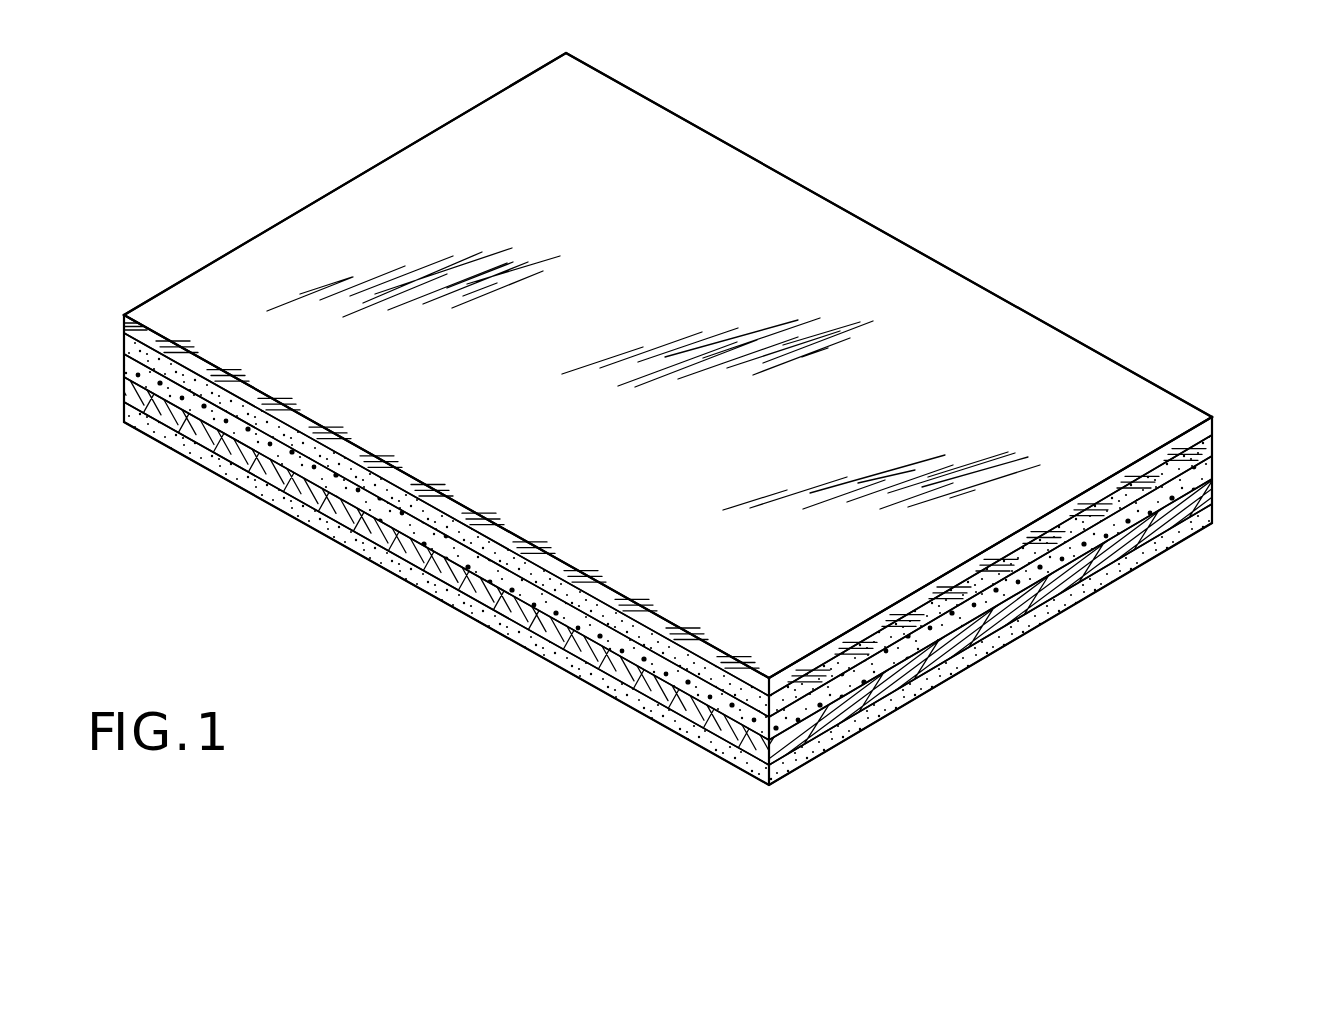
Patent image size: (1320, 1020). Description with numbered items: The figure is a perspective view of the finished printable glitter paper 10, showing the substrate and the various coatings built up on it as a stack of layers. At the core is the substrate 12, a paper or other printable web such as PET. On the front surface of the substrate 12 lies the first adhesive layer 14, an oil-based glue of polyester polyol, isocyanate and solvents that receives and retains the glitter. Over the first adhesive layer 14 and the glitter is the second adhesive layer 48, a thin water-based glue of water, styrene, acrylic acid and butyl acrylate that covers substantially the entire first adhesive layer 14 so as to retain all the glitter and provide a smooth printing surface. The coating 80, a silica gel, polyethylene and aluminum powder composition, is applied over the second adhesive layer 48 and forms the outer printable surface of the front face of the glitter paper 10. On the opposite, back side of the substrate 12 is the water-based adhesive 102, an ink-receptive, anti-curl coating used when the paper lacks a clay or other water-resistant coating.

The printable glitter paper 10 is at (668, 419).
The coating 80 is at (742, 192).
The second adhesive layer 48 is at (1213, 445).
The first adhesive layer 14 is at (1213, 470).
The substrate 12 is at (1213, 492).
The water-based adhesive 102 is at (855, 735).